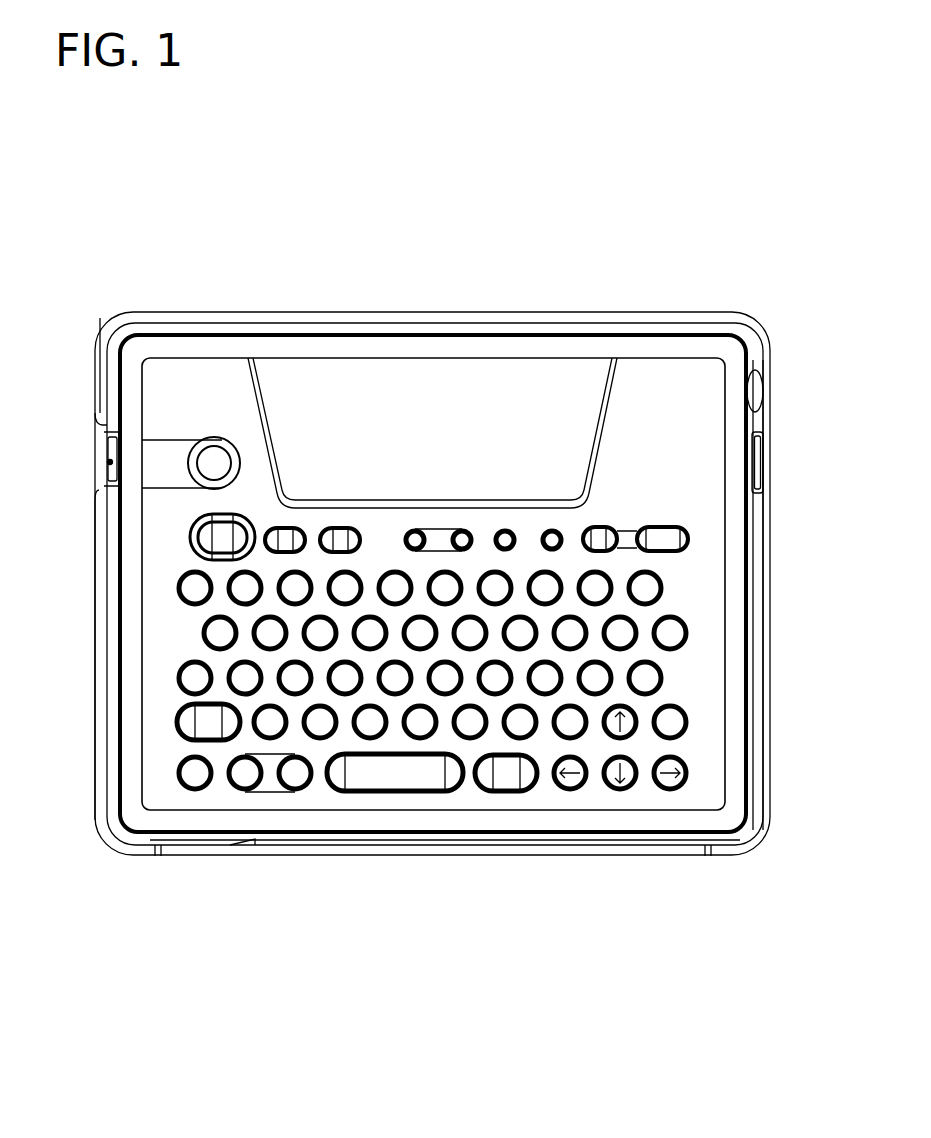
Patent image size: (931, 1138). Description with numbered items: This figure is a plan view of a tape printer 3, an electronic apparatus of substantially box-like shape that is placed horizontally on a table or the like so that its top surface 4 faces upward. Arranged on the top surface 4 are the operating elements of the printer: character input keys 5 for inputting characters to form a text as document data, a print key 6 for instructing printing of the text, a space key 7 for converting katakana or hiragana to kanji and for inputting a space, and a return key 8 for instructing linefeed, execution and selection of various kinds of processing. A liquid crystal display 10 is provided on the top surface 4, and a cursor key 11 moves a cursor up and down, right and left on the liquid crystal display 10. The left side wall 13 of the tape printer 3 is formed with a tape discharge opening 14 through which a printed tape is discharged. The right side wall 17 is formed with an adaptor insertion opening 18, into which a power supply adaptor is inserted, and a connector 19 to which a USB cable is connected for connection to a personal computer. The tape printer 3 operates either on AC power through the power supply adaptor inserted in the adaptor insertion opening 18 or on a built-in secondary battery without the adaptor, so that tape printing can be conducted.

The tape printer 3 is at (87, 318).
The top surface 4 is at (668, 442).
The character input keys 5 is at (647, 586).
The print key 6 is at (195, 538).
The space key 7 is at (390, 780).
The return key 8 is at (510, 782).
The liquid crystal display 10 is at (446, 442).
The cursor key 11 is at (634, 722).
The left side wall 13 is at (106, 702).
The tape discharge opening 14 is at (110, 470).
The right side wall 17 is at (756, 722).
The adaptor insertion opening 18 is at (764, 388).
The connector 19 is at (763, 470).